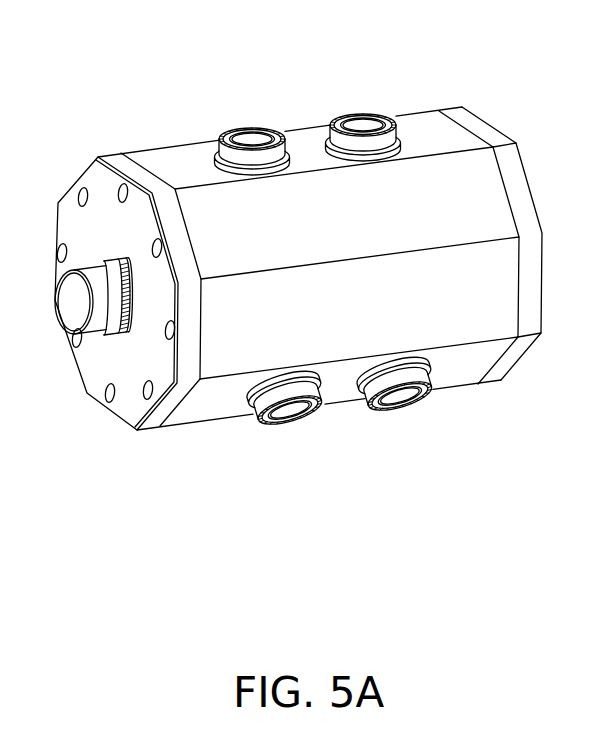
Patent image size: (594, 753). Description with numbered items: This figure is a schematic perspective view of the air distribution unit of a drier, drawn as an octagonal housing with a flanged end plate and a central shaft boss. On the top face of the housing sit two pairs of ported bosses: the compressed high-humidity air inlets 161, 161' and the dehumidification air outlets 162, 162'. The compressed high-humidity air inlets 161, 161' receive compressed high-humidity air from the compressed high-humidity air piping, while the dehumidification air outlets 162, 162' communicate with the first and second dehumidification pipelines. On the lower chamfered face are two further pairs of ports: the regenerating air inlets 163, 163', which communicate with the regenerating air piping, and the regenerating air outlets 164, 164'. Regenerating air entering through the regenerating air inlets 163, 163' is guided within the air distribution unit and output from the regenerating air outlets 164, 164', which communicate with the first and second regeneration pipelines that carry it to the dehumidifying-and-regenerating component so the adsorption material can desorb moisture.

The compressed high-humidity air inlet 161 is at (234, 103).
The dehumidification air outlet 162 is at (209, 114).
The compressed high-humidity air inlet 161' is at (359, 82).
The dehumidification air outlet 162' is at (322, 91).
The regenerating air inlet 163 is at (278, 454).
The regenerating air outlet 164 is at (300, 462).
The regenerating air inlet 163' is at (395, 444).
The regenerating air outlet 164' is at (449, 436).